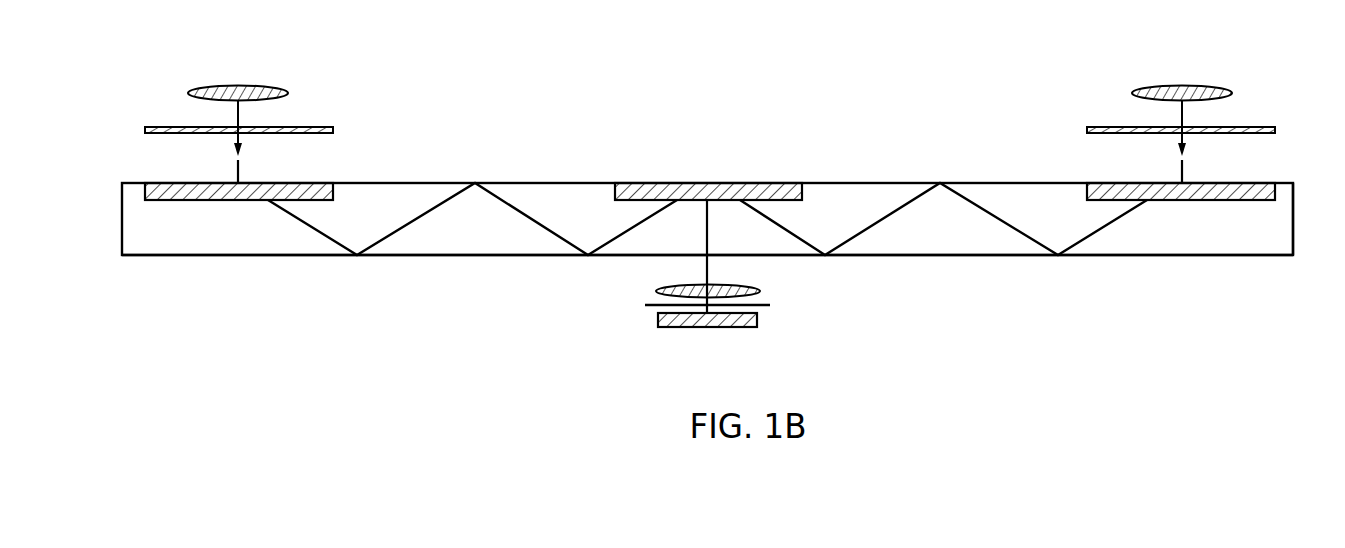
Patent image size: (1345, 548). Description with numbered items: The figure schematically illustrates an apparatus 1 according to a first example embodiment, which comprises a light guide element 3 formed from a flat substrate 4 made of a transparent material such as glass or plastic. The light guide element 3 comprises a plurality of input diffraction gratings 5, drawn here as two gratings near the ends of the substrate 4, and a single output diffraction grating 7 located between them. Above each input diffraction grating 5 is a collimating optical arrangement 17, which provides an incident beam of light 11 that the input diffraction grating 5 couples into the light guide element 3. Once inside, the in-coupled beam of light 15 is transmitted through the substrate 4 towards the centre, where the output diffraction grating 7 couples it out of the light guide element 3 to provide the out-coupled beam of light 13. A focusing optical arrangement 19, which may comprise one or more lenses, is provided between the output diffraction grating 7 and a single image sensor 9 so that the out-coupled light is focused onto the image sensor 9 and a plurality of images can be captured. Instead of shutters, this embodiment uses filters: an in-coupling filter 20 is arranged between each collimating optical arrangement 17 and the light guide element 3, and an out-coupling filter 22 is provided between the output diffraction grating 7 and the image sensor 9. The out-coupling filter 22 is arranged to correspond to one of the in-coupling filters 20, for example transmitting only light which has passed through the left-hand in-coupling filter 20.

The apparatus 1 is at (1228, 256).
The light guide element 3 is at (180, 256).
The substrate 4 is at (1293, 220).
The input diffraction grating 5 is at (333, 182).
The output diffraction grating 7 is at (707, 182).
The image sensor 9 is at (657, 318).
The incident beam of light 11 is at (240, 176).
The out-coupled beam of light 13 is at (712, 264).
The in-coupled beam of light 15 is at (548, 229).
The collimating optical arrangement 17 is at (241, 84).
The focusing optical arrangement 19 is at (758, 291).
The in-coupling filter 20 is at (152, 126).
The out-coupling filter 22 is at (770, 307).